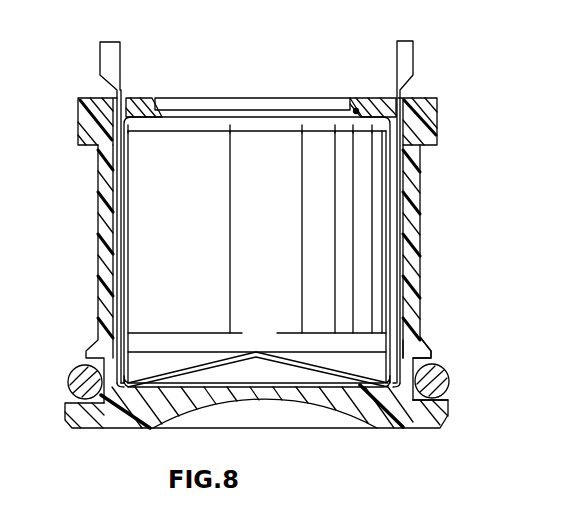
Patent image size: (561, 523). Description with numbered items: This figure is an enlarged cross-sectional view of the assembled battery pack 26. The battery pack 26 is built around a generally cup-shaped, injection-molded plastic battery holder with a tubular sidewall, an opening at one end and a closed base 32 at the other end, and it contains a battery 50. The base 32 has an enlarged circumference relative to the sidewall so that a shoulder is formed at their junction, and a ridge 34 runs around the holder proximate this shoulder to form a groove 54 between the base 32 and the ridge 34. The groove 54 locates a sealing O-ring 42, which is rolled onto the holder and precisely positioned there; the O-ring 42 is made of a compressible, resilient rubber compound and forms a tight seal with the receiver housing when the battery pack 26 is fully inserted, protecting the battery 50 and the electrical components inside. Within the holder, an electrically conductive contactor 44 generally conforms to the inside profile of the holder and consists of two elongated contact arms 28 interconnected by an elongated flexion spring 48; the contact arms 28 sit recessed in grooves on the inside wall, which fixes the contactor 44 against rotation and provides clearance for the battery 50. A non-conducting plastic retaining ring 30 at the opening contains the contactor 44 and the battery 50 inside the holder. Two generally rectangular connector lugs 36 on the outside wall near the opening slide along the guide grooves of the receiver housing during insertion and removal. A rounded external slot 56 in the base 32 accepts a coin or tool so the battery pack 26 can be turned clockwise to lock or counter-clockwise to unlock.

The battery pack 26 is at (323, 96).
The contact arms 28 is at (412, 52).
The retaining ring 30 is at (140, 98).
The base 32 is at (448, 427).
The ridge 34 is at (427, 345).
The connector lugs 36 is at (78, 120).
The O-ring 42 is at (440, 363).
The contactor 44 is at (397, 187).
The flexion spring 48 is at (256, 352).
The battery 50 is at (155, 252).
The groove 54 is at (450, 407).
The external slot 56 is at (313, 410).